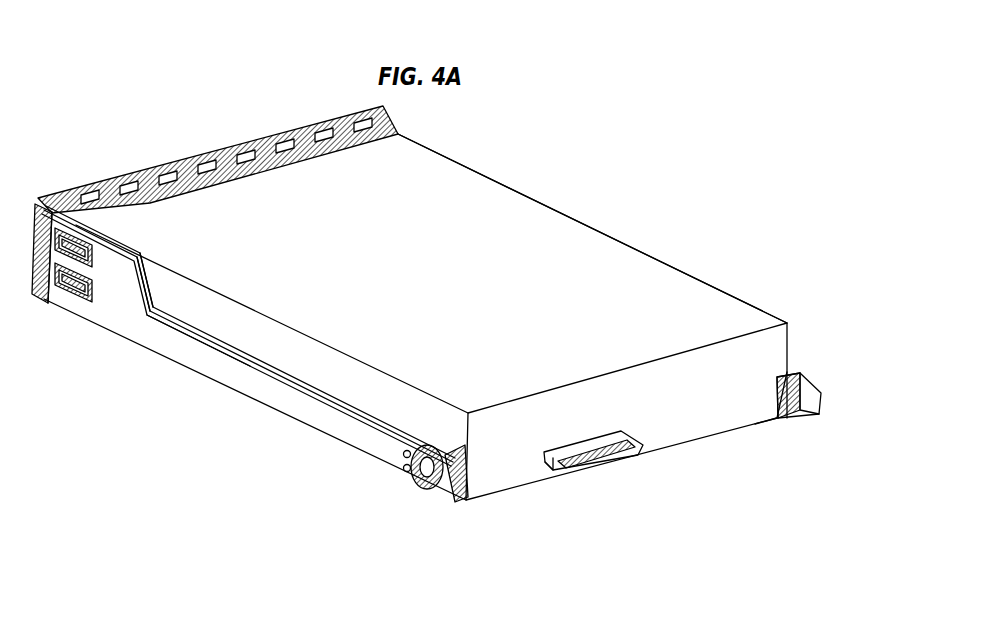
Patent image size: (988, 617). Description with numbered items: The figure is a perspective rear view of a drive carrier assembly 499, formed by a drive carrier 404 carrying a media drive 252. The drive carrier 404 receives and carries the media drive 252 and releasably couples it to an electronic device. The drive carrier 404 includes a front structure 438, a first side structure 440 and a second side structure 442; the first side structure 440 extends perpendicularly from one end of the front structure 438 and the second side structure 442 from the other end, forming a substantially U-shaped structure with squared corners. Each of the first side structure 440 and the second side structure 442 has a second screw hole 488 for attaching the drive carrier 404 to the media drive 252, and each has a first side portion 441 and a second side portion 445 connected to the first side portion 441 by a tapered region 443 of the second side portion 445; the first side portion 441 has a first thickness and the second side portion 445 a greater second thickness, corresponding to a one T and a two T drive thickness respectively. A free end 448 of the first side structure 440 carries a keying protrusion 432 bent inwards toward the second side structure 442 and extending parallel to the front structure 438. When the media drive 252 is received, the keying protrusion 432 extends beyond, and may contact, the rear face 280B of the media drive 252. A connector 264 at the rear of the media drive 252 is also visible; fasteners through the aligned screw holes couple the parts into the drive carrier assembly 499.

The drive carrier assembly 499 is at (134, 70).
The front structure 438 is at (262, 150).
The drive carrier 404 is at (187, 320).
The media drive 252 is at (440, 250).
The first side structure 440 is at (640, 252).
The free end 448 is at (793, 372).
The second side portion 445 is at (110, 308).
The tapered region 443 is at (148, 300).
The second side structure 442 is at (168, 352).
The first side portion 441 is at (222, 382).
The second screw hole 488 is at (423, 490).
The connector 264 is at (553, 463).
The rear face 280B is at (715, 410).
The keying protrusion 432 is at (790, 420).